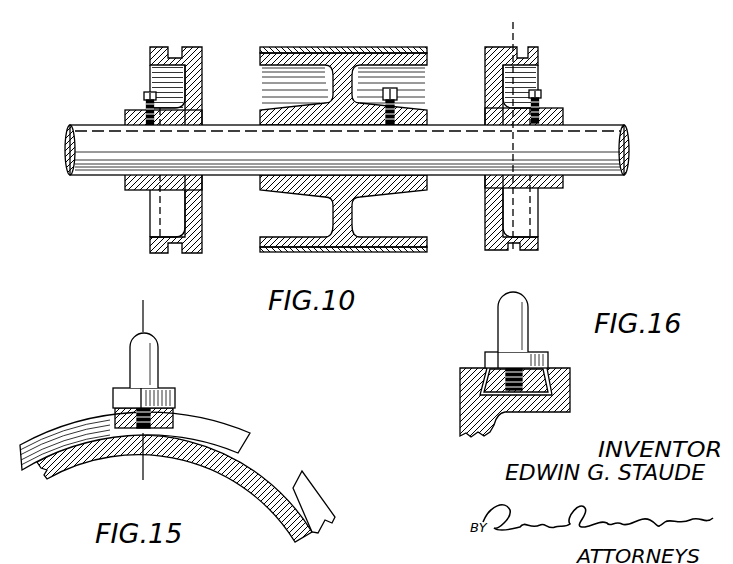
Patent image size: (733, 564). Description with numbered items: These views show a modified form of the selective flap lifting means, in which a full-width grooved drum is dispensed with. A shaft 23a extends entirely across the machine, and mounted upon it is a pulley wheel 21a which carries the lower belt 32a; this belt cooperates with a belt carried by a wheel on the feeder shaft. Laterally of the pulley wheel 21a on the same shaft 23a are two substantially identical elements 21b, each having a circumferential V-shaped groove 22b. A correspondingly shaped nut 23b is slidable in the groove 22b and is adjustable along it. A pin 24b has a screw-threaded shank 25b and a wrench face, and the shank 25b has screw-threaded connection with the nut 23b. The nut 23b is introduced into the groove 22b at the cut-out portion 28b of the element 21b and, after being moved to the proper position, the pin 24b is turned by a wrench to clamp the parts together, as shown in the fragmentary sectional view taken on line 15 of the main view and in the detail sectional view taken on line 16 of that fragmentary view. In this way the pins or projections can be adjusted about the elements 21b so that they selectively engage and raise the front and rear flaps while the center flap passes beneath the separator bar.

In FIG. 10, the section line 15- 15 is at (546, 81).
In FIG. 15, the section line 16- 16 is at (157, 391).
In FIG. 10, the pulley wheel 21a is at (342, 58).
In FIG. 10, the element 21b is at (150, 245).
In FIG. 15, the element 21b is at (290, 517).
In FIG. 16, the element 21b is at (460, 402).
In FIG. 10, the circumferential V-shaped groove 22b is at (175, 52).
In FIG. 15, the circumferential V-shaped groove 22b is at (58, 437).
In FIG. 16, the circumferential V-shaped groove 22b is at (553, 400).
In FIG. 10, the shaft 23a is at (80, 168).
In FIG. 15, the nut 23b is at (175, 415).
In FIG. 16, the nut 23b is at (570, 382).
In FIG. 15, the pin 24b is at (152, 362).
In FIG. 16, the pin 24b is at (510, 312).
In FIG. 15, the screw-threaded shank 25b is at (160, 388).
In FIG. 16, the screw-threaded shank 25b is at (500, 366).
In FIG. 15, the cut-out portion 28b is at (300, 470).
In FIG. 10, the lower belt 32a is at (281, 46).